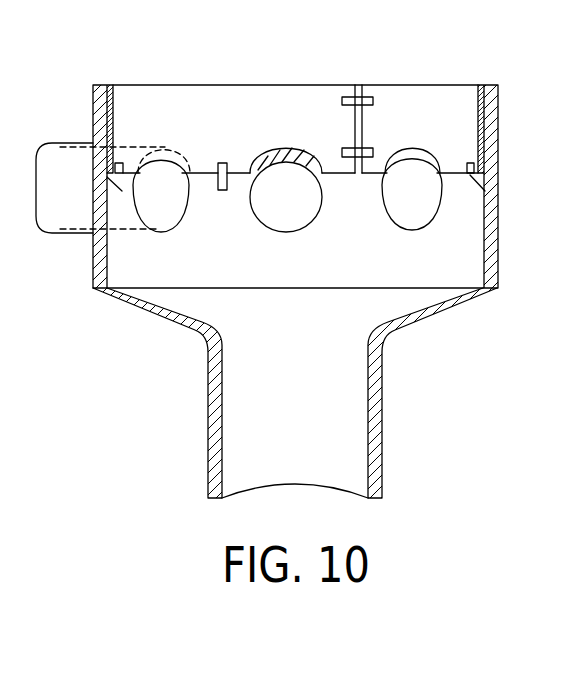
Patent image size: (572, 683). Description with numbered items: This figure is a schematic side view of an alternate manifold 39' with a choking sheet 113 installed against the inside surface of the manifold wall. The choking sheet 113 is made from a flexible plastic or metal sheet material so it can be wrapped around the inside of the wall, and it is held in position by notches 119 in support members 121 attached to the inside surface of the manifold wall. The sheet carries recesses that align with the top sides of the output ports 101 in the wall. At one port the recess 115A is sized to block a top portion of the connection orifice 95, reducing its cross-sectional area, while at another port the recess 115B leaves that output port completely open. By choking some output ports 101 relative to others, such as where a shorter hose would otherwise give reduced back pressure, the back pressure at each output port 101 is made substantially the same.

The alternate manifold 39' is at (286, 292).
The choking sheet 113 is at (113, 102).
The notches 119 is at (116, 170).
The support members 121 is at (373, 150).
The connection orifice 95 is at (293, 200).
The output ports 101 is at (408, 232).
The recess 115A is at (279, 160).
The recess 115B is at (420, 152).